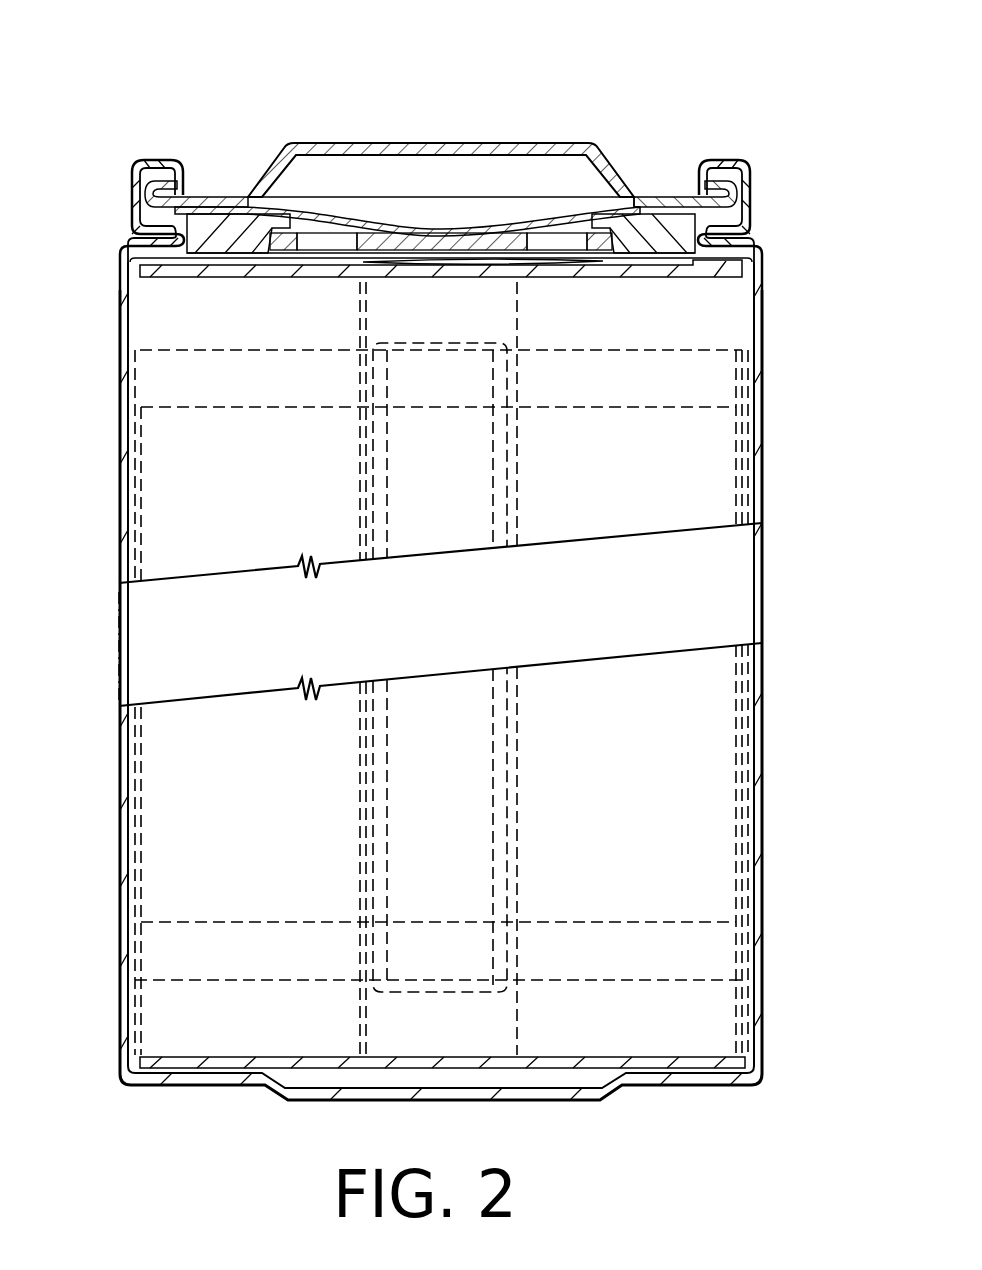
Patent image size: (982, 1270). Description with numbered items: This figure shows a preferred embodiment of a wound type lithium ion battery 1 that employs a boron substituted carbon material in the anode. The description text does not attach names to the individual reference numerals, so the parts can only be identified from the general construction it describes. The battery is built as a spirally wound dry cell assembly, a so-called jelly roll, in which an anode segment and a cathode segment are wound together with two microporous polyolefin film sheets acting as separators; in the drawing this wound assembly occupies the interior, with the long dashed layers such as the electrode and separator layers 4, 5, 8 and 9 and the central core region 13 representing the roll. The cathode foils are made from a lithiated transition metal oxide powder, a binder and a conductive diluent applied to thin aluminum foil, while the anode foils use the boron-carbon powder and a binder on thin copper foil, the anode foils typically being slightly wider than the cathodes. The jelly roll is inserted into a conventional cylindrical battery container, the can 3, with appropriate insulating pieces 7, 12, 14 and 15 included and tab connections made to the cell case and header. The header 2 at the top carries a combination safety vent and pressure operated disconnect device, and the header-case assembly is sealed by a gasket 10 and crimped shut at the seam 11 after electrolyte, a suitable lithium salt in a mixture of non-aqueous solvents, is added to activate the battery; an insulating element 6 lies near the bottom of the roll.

The battery cell 1 is at (505, 80).
The cap assembly 2 is at (640, 272).
The can 3 is at (763, 397).
The separator 4 is at (712, 454).
The positive electrode 5 is at (358, 506).
The separator layer 6 is at (748, 1010).
The bottom insulator 7 is at (248, 1075).
The negative electrode 8 is at (693, 693).
The core 9 is at (507, 741).
The gasket 10 is at (740, 220).
The crimped seam 11 is at (740, 250).
The upper insulating plate 12 is at (177, 346).
The electrode tab 13 is at (574, 408).
The lower electrode tab 14 is at (175, 921).
The lower insulating plate 15 is at (193, 987).